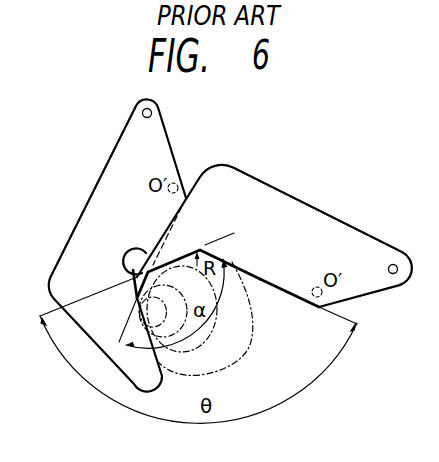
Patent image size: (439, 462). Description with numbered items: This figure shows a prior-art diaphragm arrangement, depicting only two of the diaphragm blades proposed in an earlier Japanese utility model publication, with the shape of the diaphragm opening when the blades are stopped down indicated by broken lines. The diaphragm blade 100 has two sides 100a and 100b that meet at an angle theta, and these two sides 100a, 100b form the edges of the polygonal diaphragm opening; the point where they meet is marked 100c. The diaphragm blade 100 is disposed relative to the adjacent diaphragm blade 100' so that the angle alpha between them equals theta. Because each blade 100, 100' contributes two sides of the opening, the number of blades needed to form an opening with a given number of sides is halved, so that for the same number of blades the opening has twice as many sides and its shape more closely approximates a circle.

The diaphragm blade 100 is at (274, 236).
The adjacent diaphragm blade 100' is at (106, 245).
The side of diaphragm blade 100a is at (285, 292).
The side of diaphragm blade 100b is at (142, 238).
The vertex of cam plate 100c is at (199, 249).